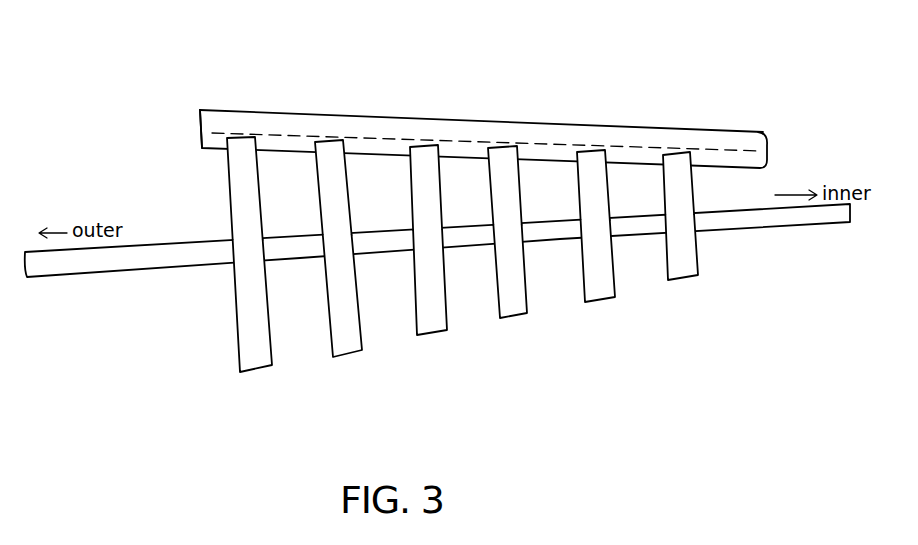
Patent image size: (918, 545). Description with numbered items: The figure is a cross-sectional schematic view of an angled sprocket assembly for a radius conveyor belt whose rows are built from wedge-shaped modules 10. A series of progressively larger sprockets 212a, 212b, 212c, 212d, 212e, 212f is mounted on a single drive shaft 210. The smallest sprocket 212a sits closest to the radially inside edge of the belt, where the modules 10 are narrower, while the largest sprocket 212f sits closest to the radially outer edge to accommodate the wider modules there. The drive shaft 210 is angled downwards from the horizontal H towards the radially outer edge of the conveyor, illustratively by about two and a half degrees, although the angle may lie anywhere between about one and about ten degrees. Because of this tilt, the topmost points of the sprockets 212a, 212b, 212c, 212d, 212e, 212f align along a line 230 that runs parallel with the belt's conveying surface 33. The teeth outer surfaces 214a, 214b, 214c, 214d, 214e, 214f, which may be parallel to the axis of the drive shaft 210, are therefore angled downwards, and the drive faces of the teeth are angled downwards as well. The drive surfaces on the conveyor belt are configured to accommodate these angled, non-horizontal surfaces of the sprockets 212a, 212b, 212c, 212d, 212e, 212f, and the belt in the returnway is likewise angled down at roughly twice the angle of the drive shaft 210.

The module 10 is at (217, 112).
The conveying surface 33 is at (418, 117).
The line 230 is at (476, 118).
The drive shaft 210 is at (780, 224).
The horizontal H is at (778, 133).
The teeth outer surface 214a is at (673, 152).
The teeth outer surface 214b is at (594, 149).
The teeth outer surface 214c is at (510, 143).
The teeth outer surface 214d is at (422, 142).
The teeth outer surface 214e is at (327, 140).
The teeth outer surface 214f is at (243, 137).
The sprocket 212a is at (685, 295).
The sprocket 212b is at (590, 315).
The sprocket 212c is at (502, 338).
The sprocket 212d is at (417, 340).
The sprocket 212e is at (340, 362).
The sprocket 212f is at (240, 373).